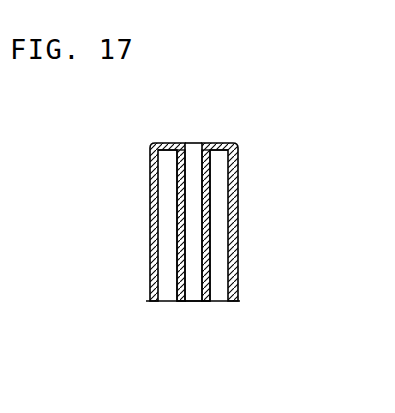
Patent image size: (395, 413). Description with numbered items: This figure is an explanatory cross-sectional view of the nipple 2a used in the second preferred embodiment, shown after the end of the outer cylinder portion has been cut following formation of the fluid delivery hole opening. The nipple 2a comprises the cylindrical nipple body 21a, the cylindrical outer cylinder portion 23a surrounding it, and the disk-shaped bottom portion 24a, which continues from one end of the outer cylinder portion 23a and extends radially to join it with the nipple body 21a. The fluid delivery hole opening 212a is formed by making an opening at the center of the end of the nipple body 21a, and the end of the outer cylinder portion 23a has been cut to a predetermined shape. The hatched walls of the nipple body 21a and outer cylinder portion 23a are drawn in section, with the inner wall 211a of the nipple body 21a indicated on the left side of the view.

The nipple 2a is at (204, 235).
The nipple body 21a is at (205, 260).
The outer cylinder portion 23a is at (238, 222).
The bottom portion 24a is at (222, 144).
The inner wall 211a is at (183, 228).
The fluid delivery hole opening 212a is at (190, 302).